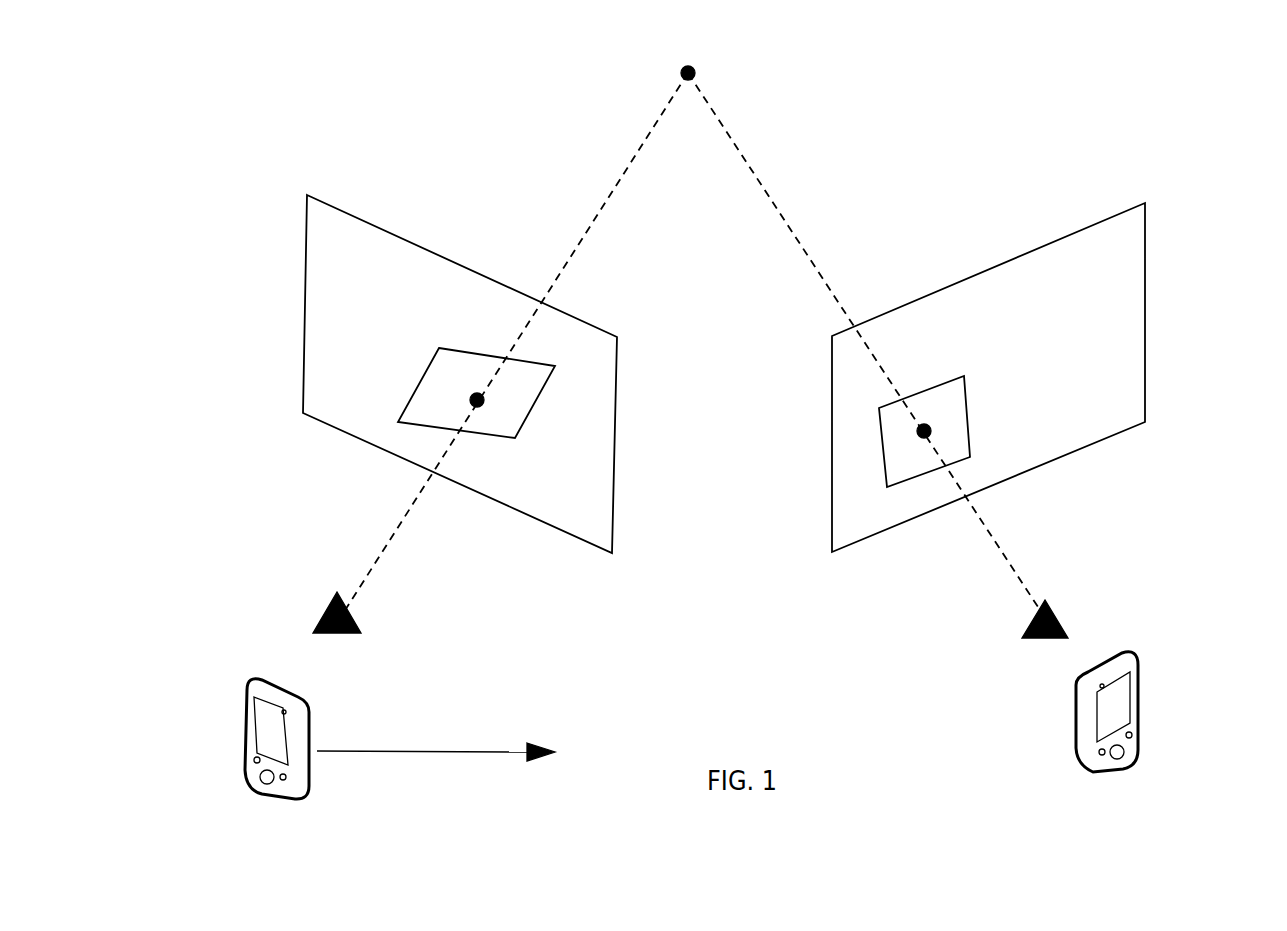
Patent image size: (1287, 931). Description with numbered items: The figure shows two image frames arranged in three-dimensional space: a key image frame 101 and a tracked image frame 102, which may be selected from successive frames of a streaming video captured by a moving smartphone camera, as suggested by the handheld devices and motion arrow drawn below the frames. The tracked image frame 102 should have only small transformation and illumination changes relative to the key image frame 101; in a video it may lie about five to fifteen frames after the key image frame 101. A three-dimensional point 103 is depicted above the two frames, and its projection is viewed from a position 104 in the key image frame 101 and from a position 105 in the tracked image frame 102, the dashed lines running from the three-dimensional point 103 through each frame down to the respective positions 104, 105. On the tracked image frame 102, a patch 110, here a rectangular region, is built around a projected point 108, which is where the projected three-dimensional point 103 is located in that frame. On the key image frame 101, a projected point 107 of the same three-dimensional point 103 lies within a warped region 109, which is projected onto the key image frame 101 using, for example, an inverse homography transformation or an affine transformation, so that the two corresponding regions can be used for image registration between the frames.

The key image frame 101 is at (323, 270).
The tracked image frame 102 is at (1132, 276).
The 3D point 103 is at (696, 72).
The position 104 is at (320, 633).
The position 105 is at (1037, 638).
The projected point 107 is at (484, 401).
The projected point 108 is at (920, 431).
The warped region 109 is at (430, 415).
The patch 110 is at (953, 447).